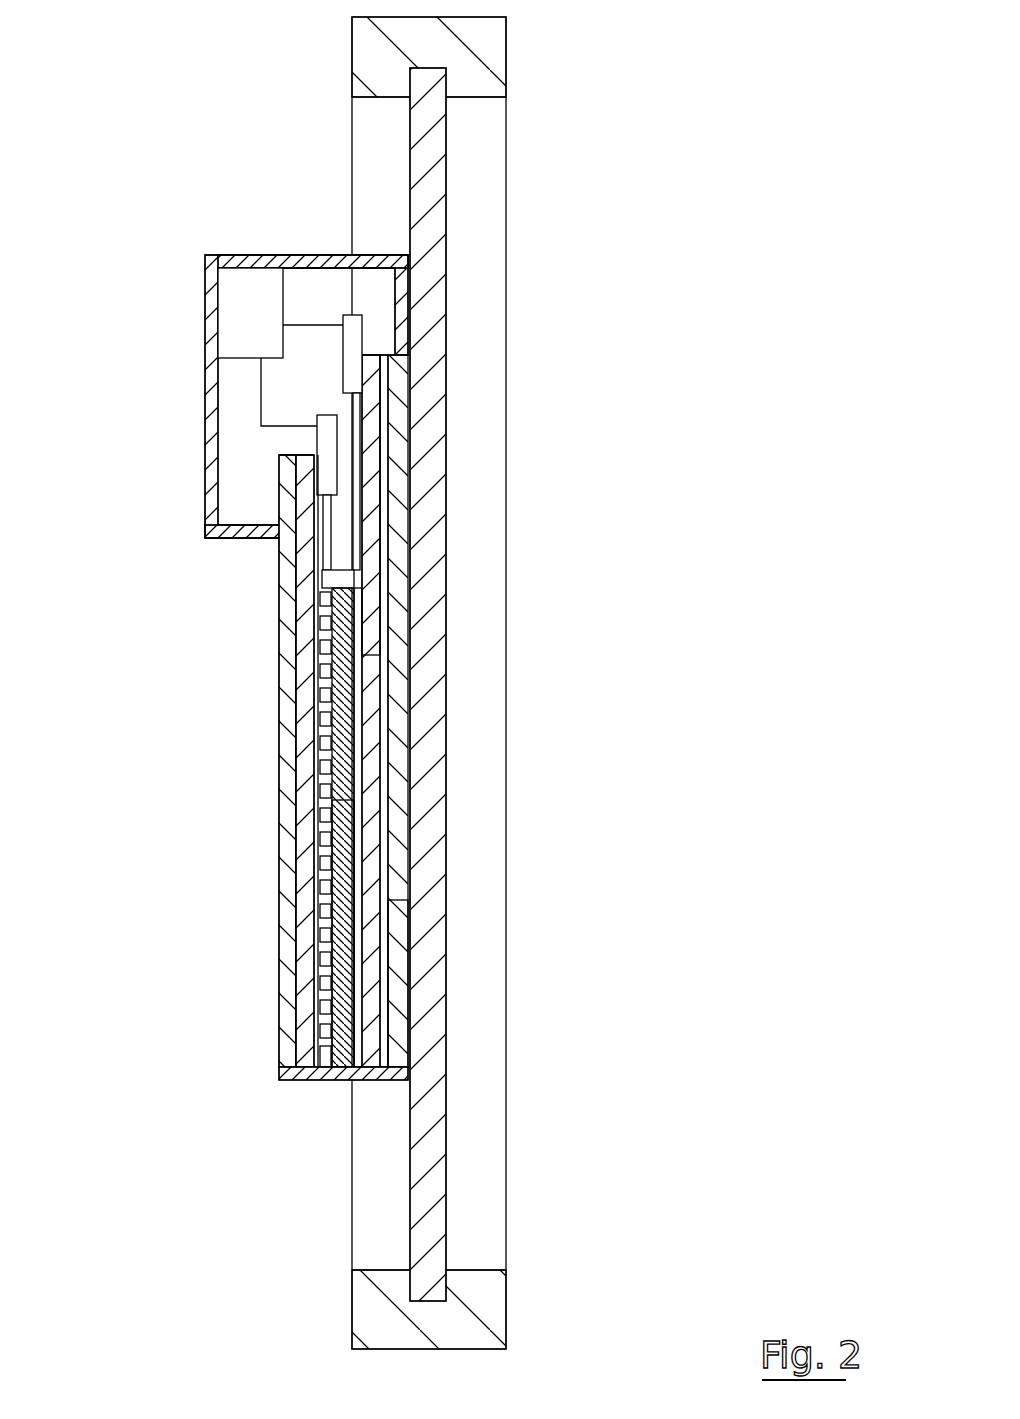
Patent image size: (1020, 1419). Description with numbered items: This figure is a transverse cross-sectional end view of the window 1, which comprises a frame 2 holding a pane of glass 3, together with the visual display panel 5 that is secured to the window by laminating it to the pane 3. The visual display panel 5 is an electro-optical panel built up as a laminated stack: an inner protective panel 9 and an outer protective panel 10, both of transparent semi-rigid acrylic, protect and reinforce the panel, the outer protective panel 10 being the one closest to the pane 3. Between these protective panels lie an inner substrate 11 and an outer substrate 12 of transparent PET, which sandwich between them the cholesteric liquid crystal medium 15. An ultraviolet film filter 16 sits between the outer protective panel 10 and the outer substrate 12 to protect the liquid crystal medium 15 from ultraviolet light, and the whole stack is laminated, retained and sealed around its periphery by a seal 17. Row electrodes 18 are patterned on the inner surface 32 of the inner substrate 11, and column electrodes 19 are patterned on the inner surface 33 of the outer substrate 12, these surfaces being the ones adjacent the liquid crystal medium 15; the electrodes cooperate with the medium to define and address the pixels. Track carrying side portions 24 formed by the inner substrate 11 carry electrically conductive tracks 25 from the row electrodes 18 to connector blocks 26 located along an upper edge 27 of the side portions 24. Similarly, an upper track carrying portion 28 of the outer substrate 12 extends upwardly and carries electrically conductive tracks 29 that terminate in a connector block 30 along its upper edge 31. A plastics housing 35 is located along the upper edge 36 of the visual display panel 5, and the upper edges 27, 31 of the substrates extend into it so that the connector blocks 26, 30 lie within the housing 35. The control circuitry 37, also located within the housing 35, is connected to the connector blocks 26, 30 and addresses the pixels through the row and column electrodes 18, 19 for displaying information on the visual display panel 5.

The window 1 is at (583, 372).
The frame 2 is at (487, 42).
The pane of glass 3 is at (436, 750).
The visual display panel 5 is at (176, 1048).
The inner protective panel 9 is at (290, 1028).
The outer protective panel 10 is at (405, 1005).
The inner substrate 11 is at (305, 935).
The outer substrate 12 is at (375, 958).
The cholesteric liquid crystal medium 15 is at (338, 905).
The ultraviolet film filter 16 is at (385, 830).
The seal 17 is at (330, 1081).
The row electrodes 18 is at (320, 660).
The column electrodes 19 is at (405, 697).
The track carrying side portions 24 is at (226, 761).
The electrically conductive tracks 25 is at (328, 572).
The connector blocks 26 is at (325, 444).
The upper edge 27 is at (316, 455).
The upper track carrying portion 28 is at (368, 540).
The electrically conductive tracks 29 is at (358, 483).
The connector block 30 is at (357, 325).
The upper edge 31 is at (375, 355).
The inner surface 32 is at (382, 572).
The inner surface 33 is at (370, 718).
The housing 35 is at (214, 284).
The upper edge 36 is at (297, 415).
The control circuitry 37 is at (252, 292).